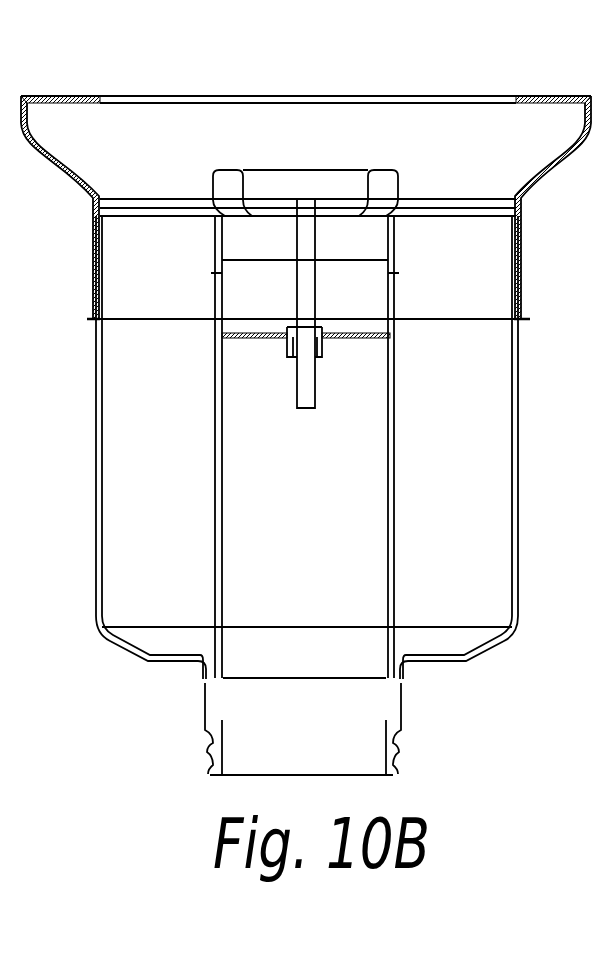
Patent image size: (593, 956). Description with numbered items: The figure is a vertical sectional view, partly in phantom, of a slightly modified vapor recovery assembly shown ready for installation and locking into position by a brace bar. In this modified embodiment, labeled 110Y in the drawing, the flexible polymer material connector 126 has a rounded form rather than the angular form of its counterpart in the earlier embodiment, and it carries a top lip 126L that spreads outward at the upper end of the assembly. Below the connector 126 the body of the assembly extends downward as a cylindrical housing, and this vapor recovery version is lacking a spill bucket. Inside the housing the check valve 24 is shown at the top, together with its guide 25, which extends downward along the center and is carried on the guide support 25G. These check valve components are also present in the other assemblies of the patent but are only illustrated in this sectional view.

The top lip 126L is at (63, 95).
The flexible polymer material connector 126 is at (61, 172).
The check valve 24 is at (291, 178).
The drain body 110Y is at (97, 382).
The guide 25 is at (316, 382).
The guide support 25G is at (267, 342).